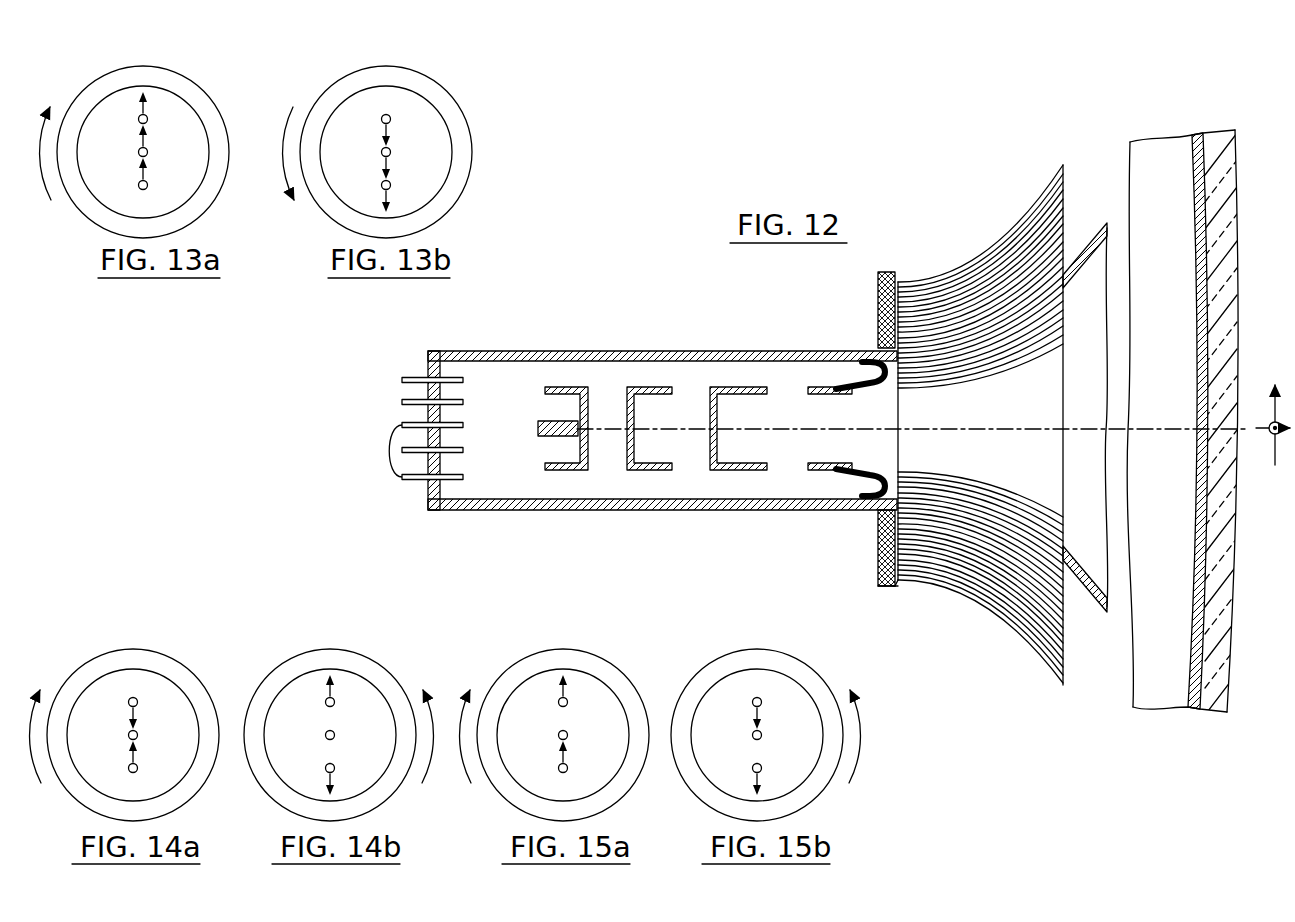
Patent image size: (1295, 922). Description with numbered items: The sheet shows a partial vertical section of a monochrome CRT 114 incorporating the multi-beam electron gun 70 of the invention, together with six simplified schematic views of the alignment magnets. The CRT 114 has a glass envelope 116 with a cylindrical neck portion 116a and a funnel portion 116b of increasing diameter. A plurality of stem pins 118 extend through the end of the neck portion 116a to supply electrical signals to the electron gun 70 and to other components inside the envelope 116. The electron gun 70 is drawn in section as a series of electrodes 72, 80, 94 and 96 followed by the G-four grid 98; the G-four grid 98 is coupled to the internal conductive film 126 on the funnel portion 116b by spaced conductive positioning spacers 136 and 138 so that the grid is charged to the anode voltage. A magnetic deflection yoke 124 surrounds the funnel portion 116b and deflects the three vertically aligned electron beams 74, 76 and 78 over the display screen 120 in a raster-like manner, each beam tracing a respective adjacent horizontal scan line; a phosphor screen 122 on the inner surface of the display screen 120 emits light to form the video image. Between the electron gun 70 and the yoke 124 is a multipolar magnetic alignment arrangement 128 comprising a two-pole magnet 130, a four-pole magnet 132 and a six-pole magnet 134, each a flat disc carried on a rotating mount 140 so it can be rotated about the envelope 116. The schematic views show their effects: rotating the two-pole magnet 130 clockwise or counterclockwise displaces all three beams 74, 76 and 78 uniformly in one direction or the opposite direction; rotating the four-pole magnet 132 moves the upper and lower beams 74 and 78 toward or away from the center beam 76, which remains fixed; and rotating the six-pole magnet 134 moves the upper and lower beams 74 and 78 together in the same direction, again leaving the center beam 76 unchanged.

In FIG. 12, the electron gun 70 is at (685, 458).
In FIG. 12, the cathode 72 is at (548, 420).
In FIG. 12, the upper electron beam 74 is at (1156, 425).
In FIG. 13A, the upper electron beam 74 is at (146, 115).
In FIG. 13B, the upper electron beam 74 is at (389, 115).
In FIG. 14A, the upper electron beam 74 is at (137, 700).
In FIG. 14B, the upper electron beam 74 is at (334, 700).
In FIG. 15A, the upper electron beam 74 is at (568, 700).
In FIG. 15B, the upper electron beam 74 is at (761, 700).
In FIG. 12, the center electron beam 76 is at (1178, 425).
In FIG. 13A, the center electron beam 76 is at (147, 150).
In FIG. 13B, the center electron beam 76 is at (390, 150).
In FIG. 14A, the center electron beam 76 is at (137, 733).
In FIG. 14B, the center electron beam 76 is at (335, 732).
In FIG. 15A, the center electron beam 76 is at (568, 733).
In FIG. 15B, the center electron beam 76 is at (763, 733).
In FIG. 12, the lower electron beam 78 is at (1163, 432).
In FIG. 13A, the lower electron beam 78 is at (147, 187).
In FIG. 13B, the lower electron beam 78 is at (390, 187).
In FIG. 14A, the lower electron beam 78 is at (138, 770).
In FIG. 14B, the lower electron beam 78 is at (336, 770).
In FIG. 15A, the lower electron beam 78 is at (568, 770).
In FIG. 15B, the lower electron beam 78 is at (763, 770).
In FIG. 12, the control grid electrode 80 is at (565, 387).
In FIG. 12, the first focusing electrode 94 is at (645, 387).
In FIG. 12, the second focusing electrode 96 is at (722, 387).
In FIG. 12, the G4 grid 98 is at (836, 387).
In FIG. 12, the monochrome CRT 114 is at (653, 282).
In FIG. 12, the glass envelope 116 is at (662, 394).
In FIG. 12, the neck portion 116a is at (578, 350).
In FIG. 12, the funnel portion 116b is at (1084, 226).
In FIG. 12, the stem pins 118 is at (386, 451).
In FIG. 12, the display screen 120 is at (1213, 131).
In FIG. 12, the phosphor screen 122 is at (1195, 140).
In FIG. 12, the magnetic deflection yoke 124 is at (963, 253).
In FIG. 12, the internal conductive film 126 is at (1082, 262).
In FIG. 12, the multipolar magnetic alignment arrangement 128 is at (895, 596).
In FIG. 12, the two-pole magnet 130 is at (878, 535).
In FIG. 13A, the two-pole magnet 130 is at (93, 82).
In FIG. 13B, the two-pole magnet 130 is at (336, 82).
In FIG. 12, the four-pole magnet 132 is at (878, 588).
In FIG. 14A, the four-pole magnet 132 is at (104, 652).
In FIG. 14B, the four-pole magnet 132 is at (313, 652).
In FIG. 12, the six-pole magnet 134 is at (897, 583).
In FIG. 15A, the six-pole magnet 134 is at (541, 652).
In FIG. 15B, the six-pole magnet 134 is at (731, 652).
In FIG. 12, the conductive positioning spacer 136 is at (878, 389).
In FIG. 12, the conductive positioning spacer 138 is at (877, 470).
In FIG. 12, the rotating mount 140 is at (876, 348).